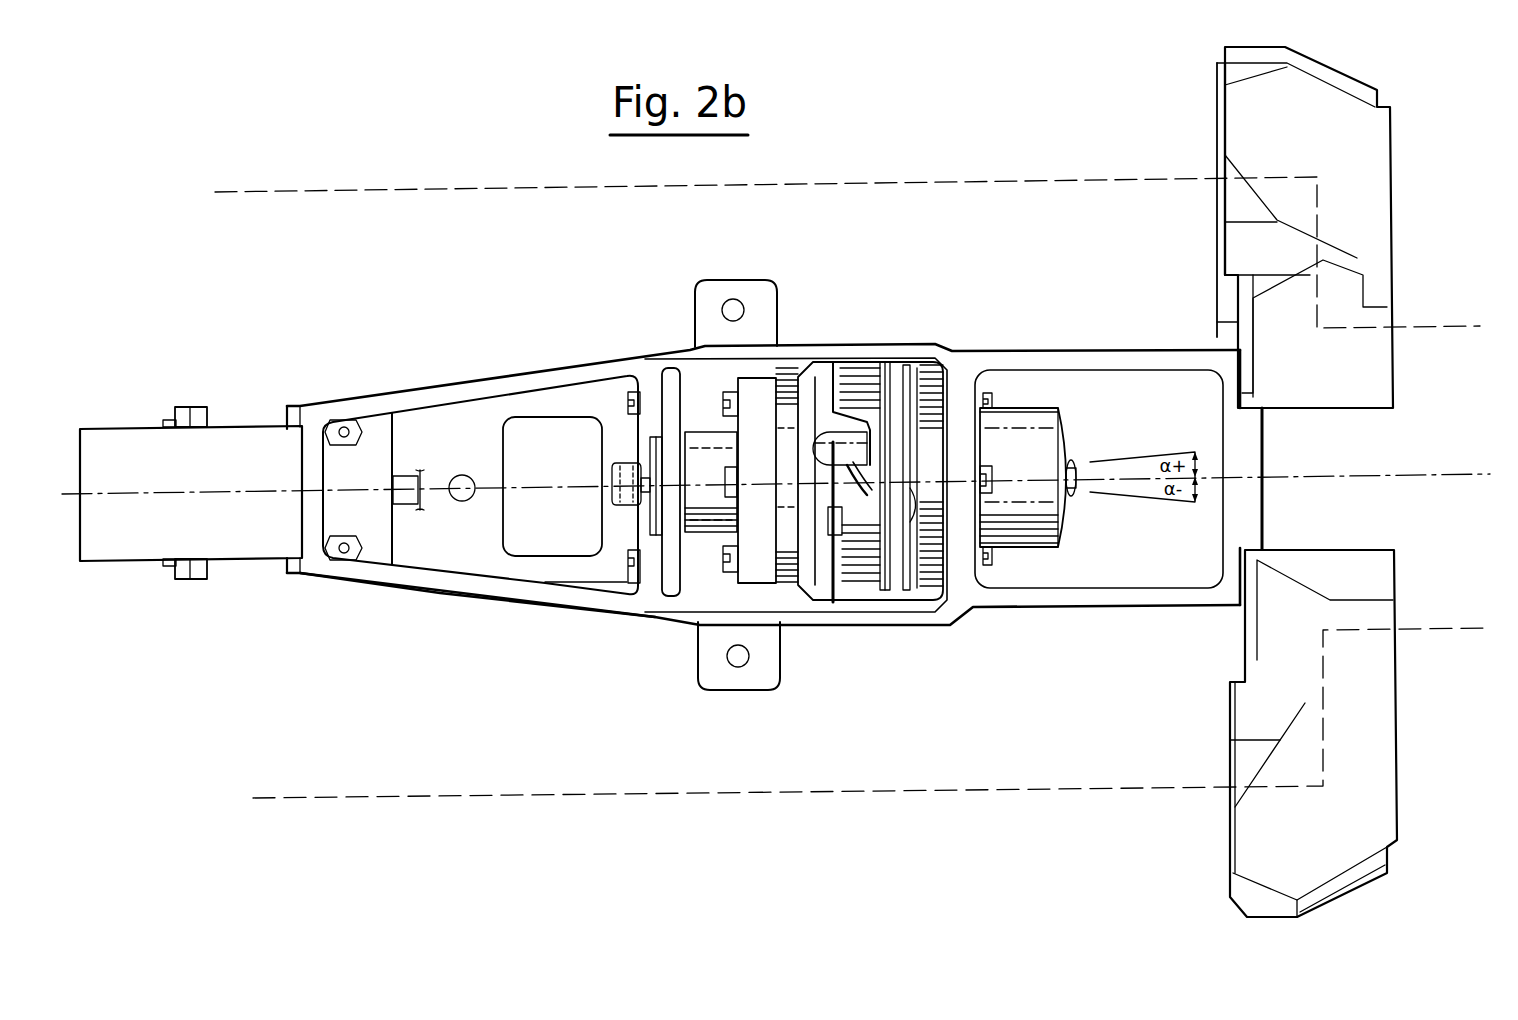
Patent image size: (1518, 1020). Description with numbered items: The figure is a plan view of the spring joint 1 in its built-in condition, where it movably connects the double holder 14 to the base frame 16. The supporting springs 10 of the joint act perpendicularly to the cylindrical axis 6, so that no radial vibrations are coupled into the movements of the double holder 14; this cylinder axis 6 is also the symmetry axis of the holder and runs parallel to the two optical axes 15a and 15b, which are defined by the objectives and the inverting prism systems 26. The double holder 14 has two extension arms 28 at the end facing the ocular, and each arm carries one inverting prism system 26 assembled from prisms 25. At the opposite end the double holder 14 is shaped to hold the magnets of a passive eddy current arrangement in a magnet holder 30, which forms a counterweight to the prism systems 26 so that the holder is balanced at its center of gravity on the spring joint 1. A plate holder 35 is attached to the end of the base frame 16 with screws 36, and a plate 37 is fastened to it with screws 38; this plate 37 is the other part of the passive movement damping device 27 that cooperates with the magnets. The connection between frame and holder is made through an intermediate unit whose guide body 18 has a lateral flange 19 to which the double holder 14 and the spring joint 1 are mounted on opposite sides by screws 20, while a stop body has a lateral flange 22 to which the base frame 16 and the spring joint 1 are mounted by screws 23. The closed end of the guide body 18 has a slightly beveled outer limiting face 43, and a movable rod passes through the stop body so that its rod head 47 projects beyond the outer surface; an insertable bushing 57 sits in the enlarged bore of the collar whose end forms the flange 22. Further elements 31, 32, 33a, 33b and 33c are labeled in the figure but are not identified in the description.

The spring joint 1 is at (862, 395).
The cylindrical axis 6 is at (1337, 480).
The supporting springs 10 is at (860, 560).
The movable double holder 14 is at (527, 600).
The optical axis 15a is at (1447, 628).
The optical axis 15b is at (930, 795).
The base frame 16 is at (473, 418).
The guide body 18 is at (1040, 415).
The lateral flange 19 is at (926, 385).
The screws 20 is at (990, 400).
The lateral flange 22 is at (790, 380).
The screws 23 is at (720, 394).
The prisms 25 is at (1283, 323).
The inverting prism systems 26 is at (1360, 422).
The passive movement damping device 27 is at (124, 401).
The extension arms 28 is at (1225, 60).
The magnet holder 30 is at (122, 558).
The shaft stub 31 is at (760, 552).
The mounting tab 32 is at (712, 290).
The mounting hole 33a is at (740, 658).
The mounting hole 33b is at (733, 308).
The hole 33c is at (462, 502).
The plate holder 35 is at (383, 447).
The screws 36 is at (348, 422).
The plate 37 is at (198, 403).
The screws 38 is at (168, 420).
The outer limiting face 43 is at (1070, 447).
The rod head 47 is at (622, 467).
The insertable bushing 57 is at (690, 598).